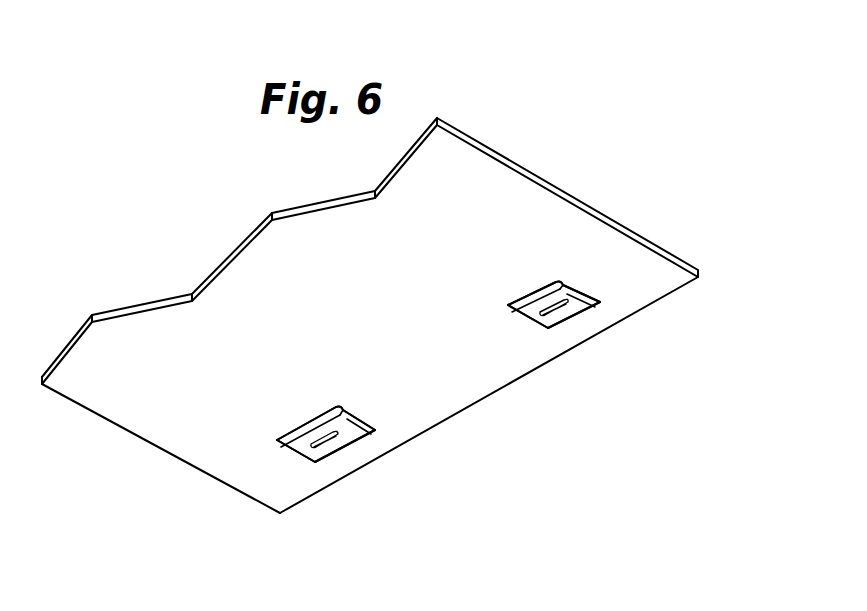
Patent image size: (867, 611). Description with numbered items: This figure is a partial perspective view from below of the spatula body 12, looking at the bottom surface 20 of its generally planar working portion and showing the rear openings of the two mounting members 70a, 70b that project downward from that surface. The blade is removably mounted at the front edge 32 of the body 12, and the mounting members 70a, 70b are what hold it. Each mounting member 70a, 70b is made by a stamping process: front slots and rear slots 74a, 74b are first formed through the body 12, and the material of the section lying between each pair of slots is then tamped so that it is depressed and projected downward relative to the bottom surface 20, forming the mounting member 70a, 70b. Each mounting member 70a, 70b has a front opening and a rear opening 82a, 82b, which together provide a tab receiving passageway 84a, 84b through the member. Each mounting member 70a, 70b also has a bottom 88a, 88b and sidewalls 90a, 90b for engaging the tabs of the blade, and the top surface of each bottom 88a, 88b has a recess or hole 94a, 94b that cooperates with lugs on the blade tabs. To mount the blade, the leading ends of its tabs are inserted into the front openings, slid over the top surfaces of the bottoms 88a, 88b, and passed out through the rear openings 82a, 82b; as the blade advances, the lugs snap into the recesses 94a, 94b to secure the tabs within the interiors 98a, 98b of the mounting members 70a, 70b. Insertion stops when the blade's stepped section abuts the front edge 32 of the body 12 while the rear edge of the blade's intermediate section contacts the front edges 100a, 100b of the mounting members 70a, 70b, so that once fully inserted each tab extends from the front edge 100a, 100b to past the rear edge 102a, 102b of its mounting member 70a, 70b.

The body 12 is at (433, 96).
The bottom surface 20 is at (440, 154).
The front edge 32 is at (512, 384).
The mounting member 70a is at (285, 460).
The mounting member 70b is at (579, 277).
The rear slot 74a is at (277, 439).
The rear slot 74b is at (554, 278).
The rear opening 82a is at (284, 437).
The rear opening 82b is at (535, 296).
The tab receiving passageway 84a is at (307, 427).
The tab receiving passageway 84b is at (525, 292).
The bottom 88a is at (321, 461).
The bottom 88b is at (571, 318).
The sidewalls 90a is at (373, 425).
The sidewalls 90b is at (592, 298).
The recess 94a is at (313, 462).
The recess 94b is at (546, 329).
The interior 98a is at (337, 405).
The interior 98b is at (535, 287).
The front edge 100a is at (377, 436).
The front edge 100b is at (574, 317).
The rear edge 102a is at (277, 443).
The rear edge 102b is at (508, 312).